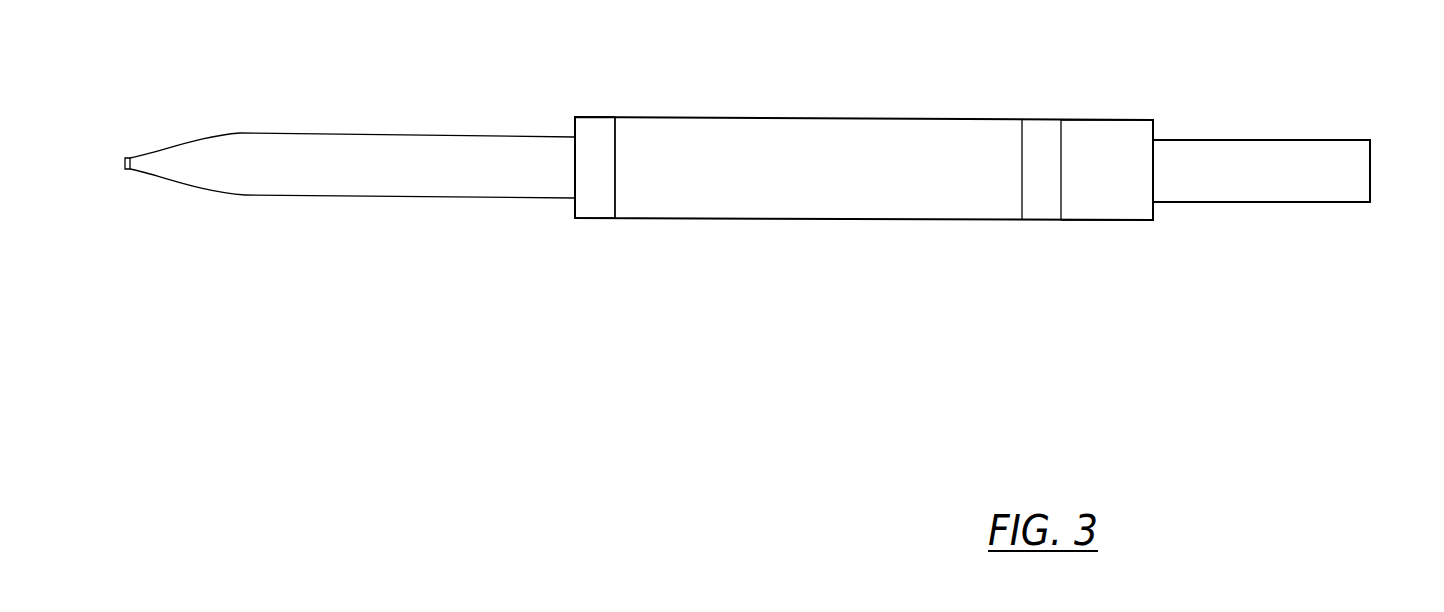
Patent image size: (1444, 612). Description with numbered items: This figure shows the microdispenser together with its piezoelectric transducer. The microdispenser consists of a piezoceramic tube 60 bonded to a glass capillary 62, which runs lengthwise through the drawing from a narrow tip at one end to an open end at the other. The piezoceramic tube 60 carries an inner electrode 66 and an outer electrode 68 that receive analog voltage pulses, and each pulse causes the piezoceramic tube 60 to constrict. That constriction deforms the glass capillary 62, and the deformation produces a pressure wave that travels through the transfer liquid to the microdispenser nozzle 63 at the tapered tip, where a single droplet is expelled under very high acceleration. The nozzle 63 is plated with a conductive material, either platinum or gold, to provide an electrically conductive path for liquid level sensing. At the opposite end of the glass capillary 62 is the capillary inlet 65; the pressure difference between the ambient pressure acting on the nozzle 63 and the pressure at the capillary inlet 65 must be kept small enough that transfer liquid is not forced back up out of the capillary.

The piezoceramic tube 60 is at (828, 160).
The glass capillary 62 is at (407, 197).
The microdispenser nozzle 63 is at (125, 160).
The capillary inlet 65 is at (1370, 160).
The inner electrode 66 is at (1103, 119).
The outer electrode 68 is at (650, 117).